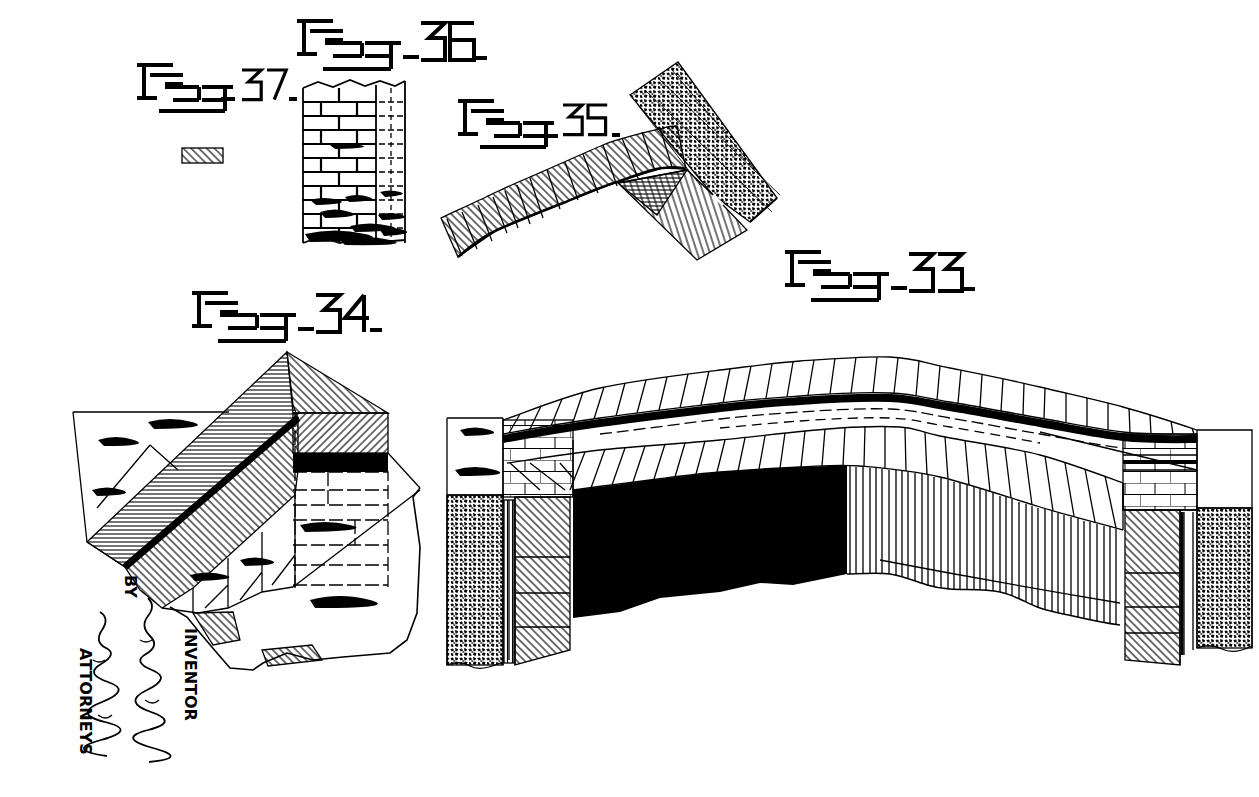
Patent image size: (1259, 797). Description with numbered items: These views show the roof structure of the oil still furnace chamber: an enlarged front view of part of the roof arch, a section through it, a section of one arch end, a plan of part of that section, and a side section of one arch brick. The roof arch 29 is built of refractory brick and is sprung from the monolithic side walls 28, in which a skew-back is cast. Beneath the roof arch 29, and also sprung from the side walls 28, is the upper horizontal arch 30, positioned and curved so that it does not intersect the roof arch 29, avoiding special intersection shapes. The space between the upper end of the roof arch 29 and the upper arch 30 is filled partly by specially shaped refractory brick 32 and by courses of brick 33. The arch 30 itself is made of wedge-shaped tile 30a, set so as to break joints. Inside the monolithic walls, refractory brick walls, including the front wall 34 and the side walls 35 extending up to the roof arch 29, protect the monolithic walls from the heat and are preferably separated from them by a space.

In FIG. 33, the side walls 28 is at (467, 668).
In FIG. 34, the side walls 28 is at (265, 662).
In FIG. 35, the side walls 28 is at (740, 127).
In FIG. 33, the roof arch 29 is at (758, 374).
In FIG. 34, the roof arch 29 is at (264, 368).
In FIG. 35, the roof arch 29 is at (540, 212).
In FIG. 33, the upper horizontal arch 30 is at (1052, 495).
In FIG. 36, the upper horizontal arch 30 is at (303, 173).
In FIG. 37, the wedge-shaped tile 30a is at (212, 166).
In FIG. 33, the specially shaped refractory brick 32 is at (838, 400).
In FIG. 34, the specially shaped refractory brick 32 is at (313, 405).
In FIG. 33, the courses of brick 33 is at (598, 432).
In FIG. 34, the courses of brick 33 is at (392, 420).
In FIG. 36, the courses of brick 33 is at (405, 165).
In FIG. 33, the front wall 34 is at (880, 355).
In FIG. 33, the side walls 35 is at (1142, 656).
In FIG. 34, the side walls 35 is at (135, 457).
In FIG. 35, the side walls 35 is at (668, 225).